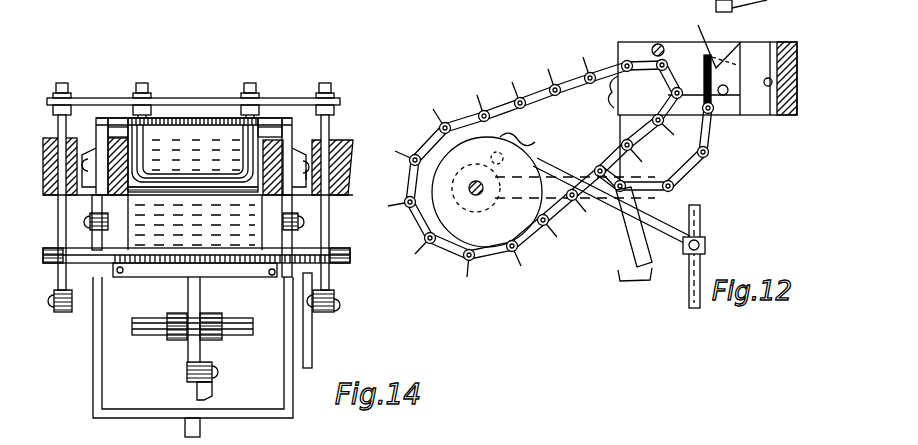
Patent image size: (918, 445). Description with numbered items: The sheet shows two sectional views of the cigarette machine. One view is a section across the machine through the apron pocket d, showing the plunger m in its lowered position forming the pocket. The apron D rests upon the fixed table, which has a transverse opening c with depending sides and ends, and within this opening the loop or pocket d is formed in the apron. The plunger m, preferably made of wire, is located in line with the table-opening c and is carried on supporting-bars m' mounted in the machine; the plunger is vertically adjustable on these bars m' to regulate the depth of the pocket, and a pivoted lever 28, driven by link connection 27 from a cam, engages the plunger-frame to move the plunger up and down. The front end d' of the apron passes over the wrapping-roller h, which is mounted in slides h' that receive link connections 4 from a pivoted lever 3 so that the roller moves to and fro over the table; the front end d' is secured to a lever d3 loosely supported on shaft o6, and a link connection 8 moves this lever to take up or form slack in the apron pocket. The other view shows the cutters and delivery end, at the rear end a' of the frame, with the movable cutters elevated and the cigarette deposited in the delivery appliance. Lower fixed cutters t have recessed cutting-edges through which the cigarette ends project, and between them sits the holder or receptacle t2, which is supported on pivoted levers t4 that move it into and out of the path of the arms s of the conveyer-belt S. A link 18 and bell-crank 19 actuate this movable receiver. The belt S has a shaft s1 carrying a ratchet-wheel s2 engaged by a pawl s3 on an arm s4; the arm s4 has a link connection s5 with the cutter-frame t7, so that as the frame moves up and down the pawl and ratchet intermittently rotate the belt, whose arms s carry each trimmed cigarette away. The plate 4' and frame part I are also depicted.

In FIG. 14, the plunger supporting-bars m' is at (209, 108).
In FIG. 14, the plunger m is at (183, 117).
In FIG. 14, the apron D is at (203, 118).
In FIG. 14, the wrapping-roller h is at (218, 118).
In FIG. 14, the slides h' is at (341, 174).
In FIG. 14, the apron pocket d is at (196, 155).
In FIG. 14, the front end of apron d' is at (198, 222).
In FIG. 14, the table-opening c is at (243, 180).
In FIG. 14, the link connections 4 is at (105, 184).
In FIG. 14, the right side plate 4' is at (283, 197).
In FIG. 14, the pivoted lever 28 is at (67, 312).
In FIG. 14, the link connection 27 is at (337, 312).
In FIG. 14, the pivoted lever 3 is at (293, 417).
In FIG. 14, the lever d3 is at (203, 300).
In FIG. 14, the shaft o6 is at (252, 335).
In FIG. 14, the link connection 8 is at (212, 390).
In FIG. 12, the arms s is at (535, 164).
In FIG. 12, the conveyer-belt S is at (511, 173).
In FIG. 12, the shaft s1 is at (472, 204).
In FIG. 12, the ratchet-wheel s2 is at (457, 192).
In FIG. 12, the pawl s3 is at (484, 150).
In FIG. 12, the arm s4 is at (537, 148).
In FIG. 12, the link connection s5 is at (592, 237).
In FIG. 12, the frame I is at (702, 101).
In FIG. 12, the fixed cutters t is at (700, 78).
In FIG. 12, the holder or receptacle t2 is at (735, 55).
In FIG. 12, the pivoted levers t4 is at (707, 133).
In FIG. 12, the bell-crank 19 is at (676, 183).
In FIG. 12, the link 18 is at (632, 247).
In FIG. 12, the rear end of frame a' is at (634, 246).
In FIG. 12, the cutter-frame t7 is at (700, 213).